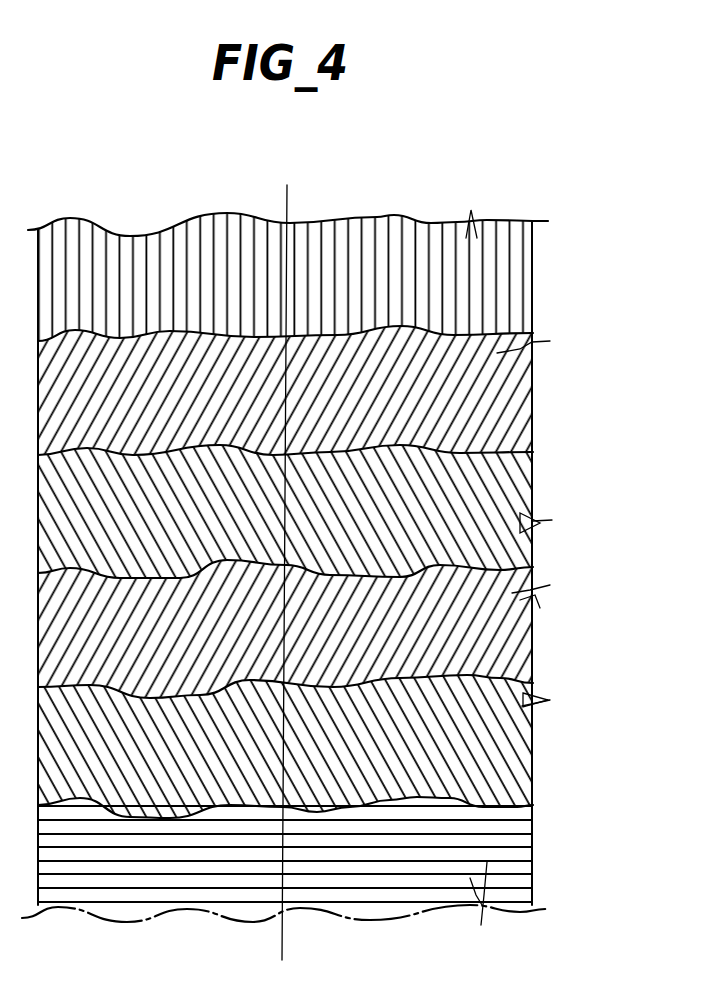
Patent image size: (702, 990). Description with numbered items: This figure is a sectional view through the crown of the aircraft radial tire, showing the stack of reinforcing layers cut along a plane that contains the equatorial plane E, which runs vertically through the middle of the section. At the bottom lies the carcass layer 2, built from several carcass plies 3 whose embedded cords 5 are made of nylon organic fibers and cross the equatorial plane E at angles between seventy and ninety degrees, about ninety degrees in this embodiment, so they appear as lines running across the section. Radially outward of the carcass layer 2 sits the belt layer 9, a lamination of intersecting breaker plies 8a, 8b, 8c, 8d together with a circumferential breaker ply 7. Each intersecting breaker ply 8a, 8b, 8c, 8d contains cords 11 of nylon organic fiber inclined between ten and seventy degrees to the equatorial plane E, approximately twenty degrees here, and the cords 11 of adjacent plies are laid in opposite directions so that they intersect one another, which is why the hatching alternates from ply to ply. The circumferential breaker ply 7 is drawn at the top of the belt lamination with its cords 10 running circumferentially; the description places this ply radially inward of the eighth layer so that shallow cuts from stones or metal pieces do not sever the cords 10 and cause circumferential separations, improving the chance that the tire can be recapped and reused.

The carcass layer 2 is at (307, 815).
The carcass ply 3 is at (298, 884).
The cords 5 is at (479, 909).
The circumferential breaker ply 7 is at (300, 280).
The intersecting breaker ply 8a is at (311, 747).
The intersecting breaker ply 8b is at (311, 630).
The intersecting breaker ply 8c is at (311, 515).
The intersecting breaker ply 8d is at (312, 395).
The belt layer 9 is at (316, 575).
The cords 10 is at (479, 207).
The cords 11 is at (541, 523).
The equatorial plane E is at (288, 203).